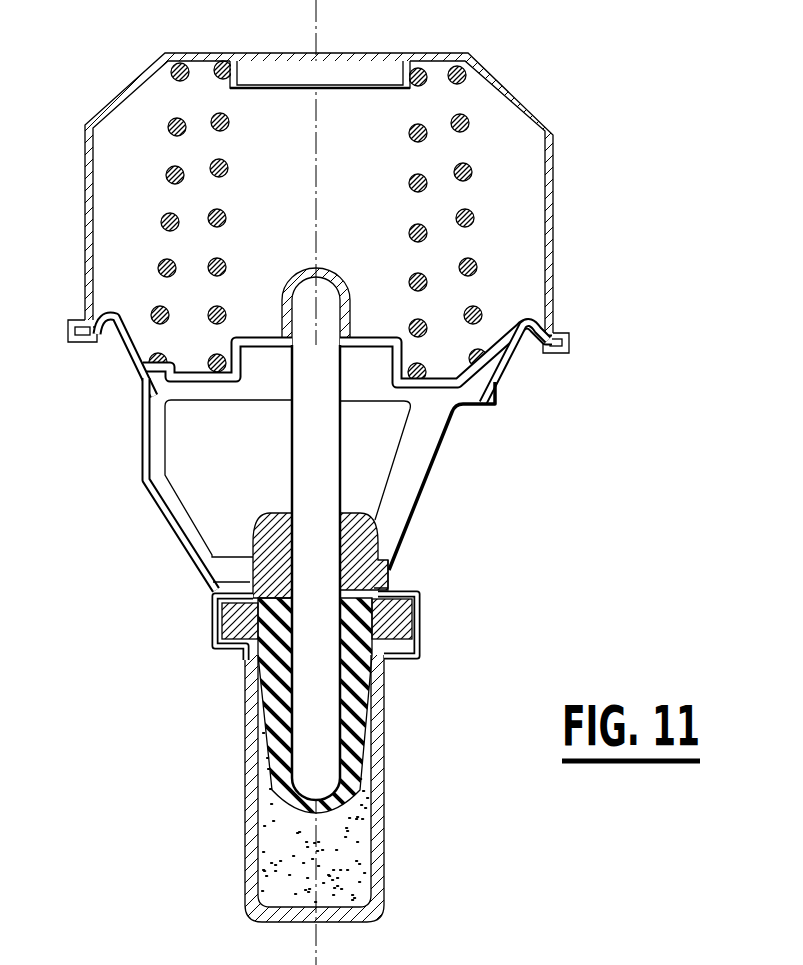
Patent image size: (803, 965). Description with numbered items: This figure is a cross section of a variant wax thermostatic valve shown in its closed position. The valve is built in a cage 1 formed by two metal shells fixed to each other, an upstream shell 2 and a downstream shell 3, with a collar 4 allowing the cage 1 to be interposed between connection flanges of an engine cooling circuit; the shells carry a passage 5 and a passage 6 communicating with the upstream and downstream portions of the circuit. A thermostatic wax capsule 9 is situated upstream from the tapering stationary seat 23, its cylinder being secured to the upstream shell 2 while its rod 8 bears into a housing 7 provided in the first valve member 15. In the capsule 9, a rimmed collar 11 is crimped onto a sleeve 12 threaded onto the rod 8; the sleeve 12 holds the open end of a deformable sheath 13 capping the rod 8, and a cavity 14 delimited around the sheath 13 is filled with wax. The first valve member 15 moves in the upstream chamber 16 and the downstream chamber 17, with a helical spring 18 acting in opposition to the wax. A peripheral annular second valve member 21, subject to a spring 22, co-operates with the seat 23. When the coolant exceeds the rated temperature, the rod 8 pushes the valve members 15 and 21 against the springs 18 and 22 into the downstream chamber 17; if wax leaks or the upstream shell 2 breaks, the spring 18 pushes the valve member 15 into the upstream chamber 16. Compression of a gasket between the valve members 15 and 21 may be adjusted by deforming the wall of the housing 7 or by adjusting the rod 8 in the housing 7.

The cage 1 is at (512, 412).
The upstream shell 2 is at (150, 505).
The downstream shell 3 is at (520, 97).
The collar 4 is at (80, 340).
The passage 5 is at (460, 455).
The passage 6 is at (352, 62).
The housing 7 is at (330, 270).
The rod 8 is at (303, 425).
The thermostatic capsule 9 is at (388, 848).
The rimmed collar 11 is at (212, 614).
The sleeve 12 is at (262, 537).
The deformable sheath 13 is at (250, 690).
The cavity 14 is at (270, 823).
The first valve member 15 is at (348, 318).
The upstream chamber 16 is at (358, 475).
The downstream chamber 17 is at (518, 212).
The helical spring 18 is at (225, 212).
The second valve member 21 is at (450, 370).
The spring 22 is at (168, 175).
The stationary seat 23 is at (127, 377).